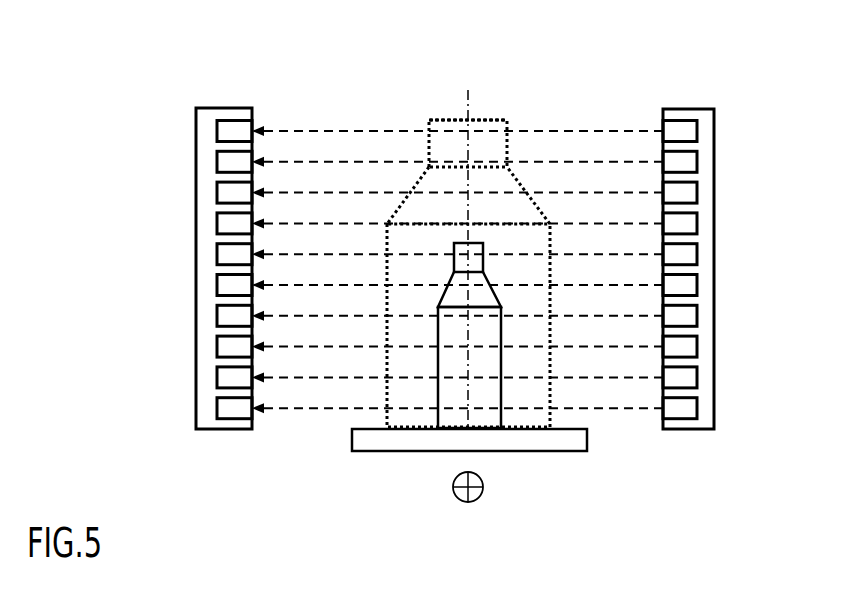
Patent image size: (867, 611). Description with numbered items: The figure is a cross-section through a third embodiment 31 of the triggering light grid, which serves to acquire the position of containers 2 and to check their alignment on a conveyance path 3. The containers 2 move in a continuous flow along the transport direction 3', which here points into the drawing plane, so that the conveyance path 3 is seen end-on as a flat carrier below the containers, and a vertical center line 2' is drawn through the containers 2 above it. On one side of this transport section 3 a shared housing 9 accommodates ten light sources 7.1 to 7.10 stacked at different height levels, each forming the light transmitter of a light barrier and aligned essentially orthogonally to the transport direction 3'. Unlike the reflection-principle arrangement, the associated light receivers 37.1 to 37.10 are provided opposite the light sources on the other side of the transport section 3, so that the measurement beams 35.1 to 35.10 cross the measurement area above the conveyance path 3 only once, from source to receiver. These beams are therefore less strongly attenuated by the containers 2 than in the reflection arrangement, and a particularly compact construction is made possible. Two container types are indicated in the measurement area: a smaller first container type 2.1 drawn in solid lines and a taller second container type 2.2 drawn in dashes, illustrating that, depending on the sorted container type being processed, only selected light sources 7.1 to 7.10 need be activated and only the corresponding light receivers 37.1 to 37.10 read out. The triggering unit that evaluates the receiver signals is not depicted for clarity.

The container 2 is at (468, 85).
The central axis of module 2' is at (494, 252).
The first container type 2.1 is at (438, 392).
The second container type 2.2 is at (387, 392).
The conveyance path 3 is at (484, 460).
The transport direction 3' is at (485, 497).
The light source 7.1 is at (681, 410).
The light source 7.10 is at (680, 130).
The housing 9 is at (714, 320).
The third embodiment 31 is at (567, 64).
The measurement beam 35.1 is at (283, 410).
The measurement beam 35.10 is at (314, 128).
The light receiver 37.1 is at (232, 410).
The light receiver 37.10 is at (231, 130).